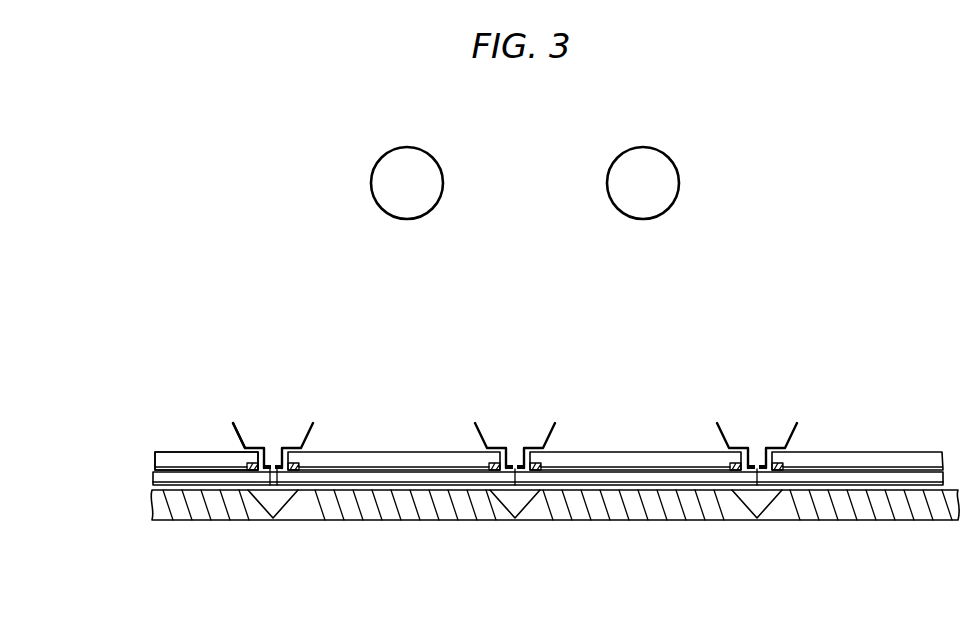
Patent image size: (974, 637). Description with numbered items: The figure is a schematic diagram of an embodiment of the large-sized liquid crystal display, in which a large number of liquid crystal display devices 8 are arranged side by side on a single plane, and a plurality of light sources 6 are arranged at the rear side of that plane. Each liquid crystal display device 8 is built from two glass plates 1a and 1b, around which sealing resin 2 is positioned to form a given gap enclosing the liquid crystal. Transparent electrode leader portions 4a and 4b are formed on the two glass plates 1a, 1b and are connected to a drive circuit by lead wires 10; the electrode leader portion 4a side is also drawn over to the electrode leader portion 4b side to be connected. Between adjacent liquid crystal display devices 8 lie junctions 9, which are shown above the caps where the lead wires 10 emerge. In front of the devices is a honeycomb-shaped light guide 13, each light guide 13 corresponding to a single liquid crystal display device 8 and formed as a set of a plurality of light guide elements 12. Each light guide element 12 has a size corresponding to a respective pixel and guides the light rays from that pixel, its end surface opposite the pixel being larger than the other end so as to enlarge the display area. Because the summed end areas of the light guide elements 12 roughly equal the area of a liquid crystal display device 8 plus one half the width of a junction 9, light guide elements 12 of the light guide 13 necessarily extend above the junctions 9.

The glass plate 1a is at (155, 462).
The glass plate 1b is at (152, 480).
The sealing resin 2 is at (250, 463).
The transparent electrode leader portion 4a is at (267, 470).
The transparent electrode leader portion 4b is at (280, 470).
The light source 6 is at (370, 186).
The liquid crystal display device 8 is at (375, 452).
The junction 9 is at (252, 434).
The lead wire 10 is at (237, 424).
The light guide element 12 is at (408, 514).
The light guide 13 is at (743, 530).